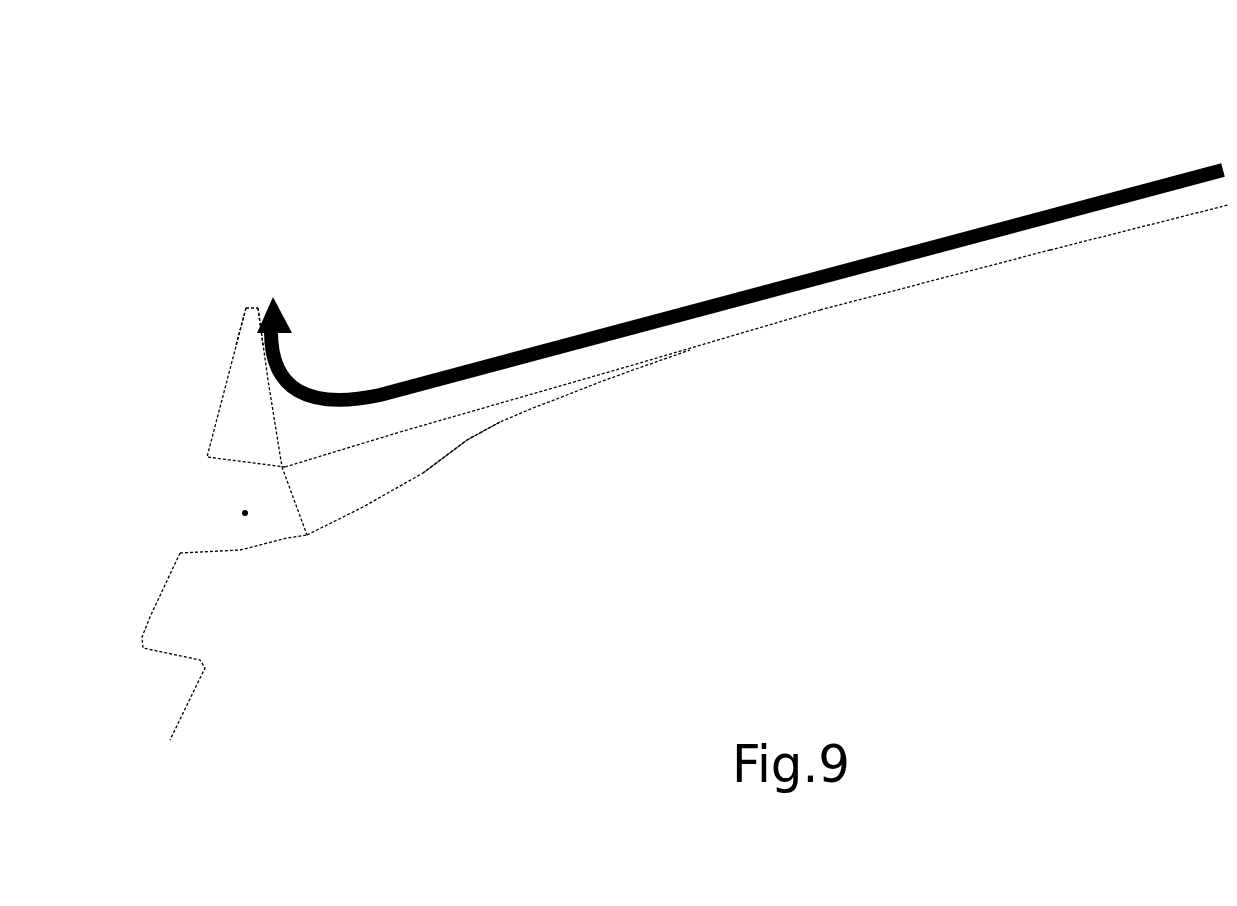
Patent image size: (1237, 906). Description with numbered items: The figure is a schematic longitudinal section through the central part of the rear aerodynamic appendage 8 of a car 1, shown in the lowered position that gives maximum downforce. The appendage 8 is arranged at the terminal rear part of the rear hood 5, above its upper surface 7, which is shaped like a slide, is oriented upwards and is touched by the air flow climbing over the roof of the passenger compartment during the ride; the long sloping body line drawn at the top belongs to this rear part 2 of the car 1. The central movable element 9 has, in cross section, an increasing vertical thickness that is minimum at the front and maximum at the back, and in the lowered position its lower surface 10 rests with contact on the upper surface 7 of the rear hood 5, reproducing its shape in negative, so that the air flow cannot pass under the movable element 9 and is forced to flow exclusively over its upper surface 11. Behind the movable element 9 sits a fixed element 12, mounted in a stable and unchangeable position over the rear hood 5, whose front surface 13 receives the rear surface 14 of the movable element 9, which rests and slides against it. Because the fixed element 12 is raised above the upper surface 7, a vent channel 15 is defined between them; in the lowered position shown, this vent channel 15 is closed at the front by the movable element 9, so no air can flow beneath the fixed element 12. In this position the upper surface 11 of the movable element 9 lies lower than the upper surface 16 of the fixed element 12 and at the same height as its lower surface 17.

The car 1 is at (190, 135).
The vehicle body 2 is at (887, 105).
The rear hood 5 is at (1050, 250).
The upper surface 7 is at (692, 347).
The aerodynamic appendage 8 is at (433, 193).
The movable element 9 is at (498, 442).
The lower surface 10 is at (426, 476).
The upper surface 11 is at (407, 424).
The fixed element 12 is at (246, 387).
The front surface 13 is at (281, 440).
The rear surface 14 is at (291, 499).
The vent channel 15 is at (245, 516).
The upper surface 16 is at (248, 298).
The lower surface 17 is at (223, 464).